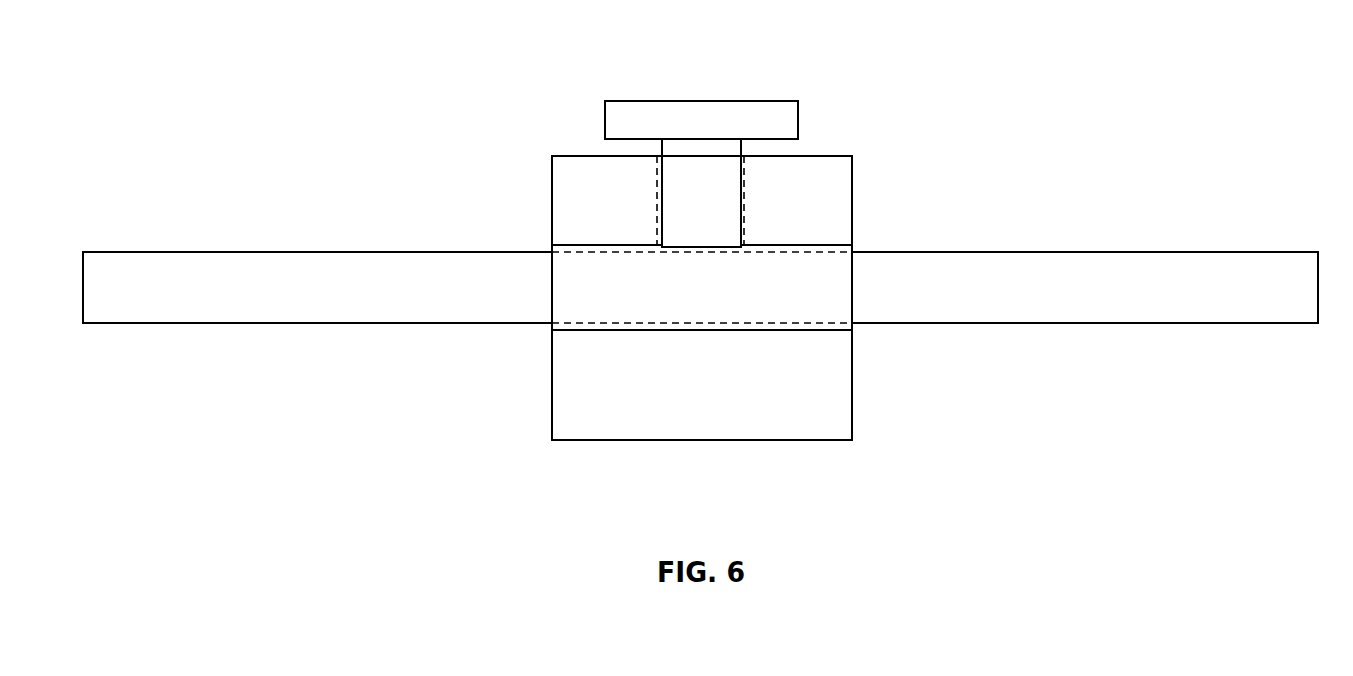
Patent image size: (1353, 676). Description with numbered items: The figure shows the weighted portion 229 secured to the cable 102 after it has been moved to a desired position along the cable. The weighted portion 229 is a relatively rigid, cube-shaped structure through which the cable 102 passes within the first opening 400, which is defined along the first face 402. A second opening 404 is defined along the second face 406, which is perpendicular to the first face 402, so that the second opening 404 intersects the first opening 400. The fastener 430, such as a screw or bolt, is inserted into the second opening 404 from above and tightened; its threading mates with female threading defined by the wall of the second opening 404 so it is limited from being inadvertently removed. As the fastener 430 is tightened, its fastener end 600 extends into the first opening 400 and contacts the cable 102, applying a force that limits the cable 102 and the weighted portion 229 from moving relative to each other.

The cable 102 is at (1240, 252).
The weighted portion 229 is at (473, 107).
The first opening 400 is at (702, 330).
The first face 402 is at (852, 395).
The second opening 404 is at (745, 187).
The second face 406 is at (833, 155).
The fastener 430 is at (643, 100).
The fastener end 600 is at (727, 252).